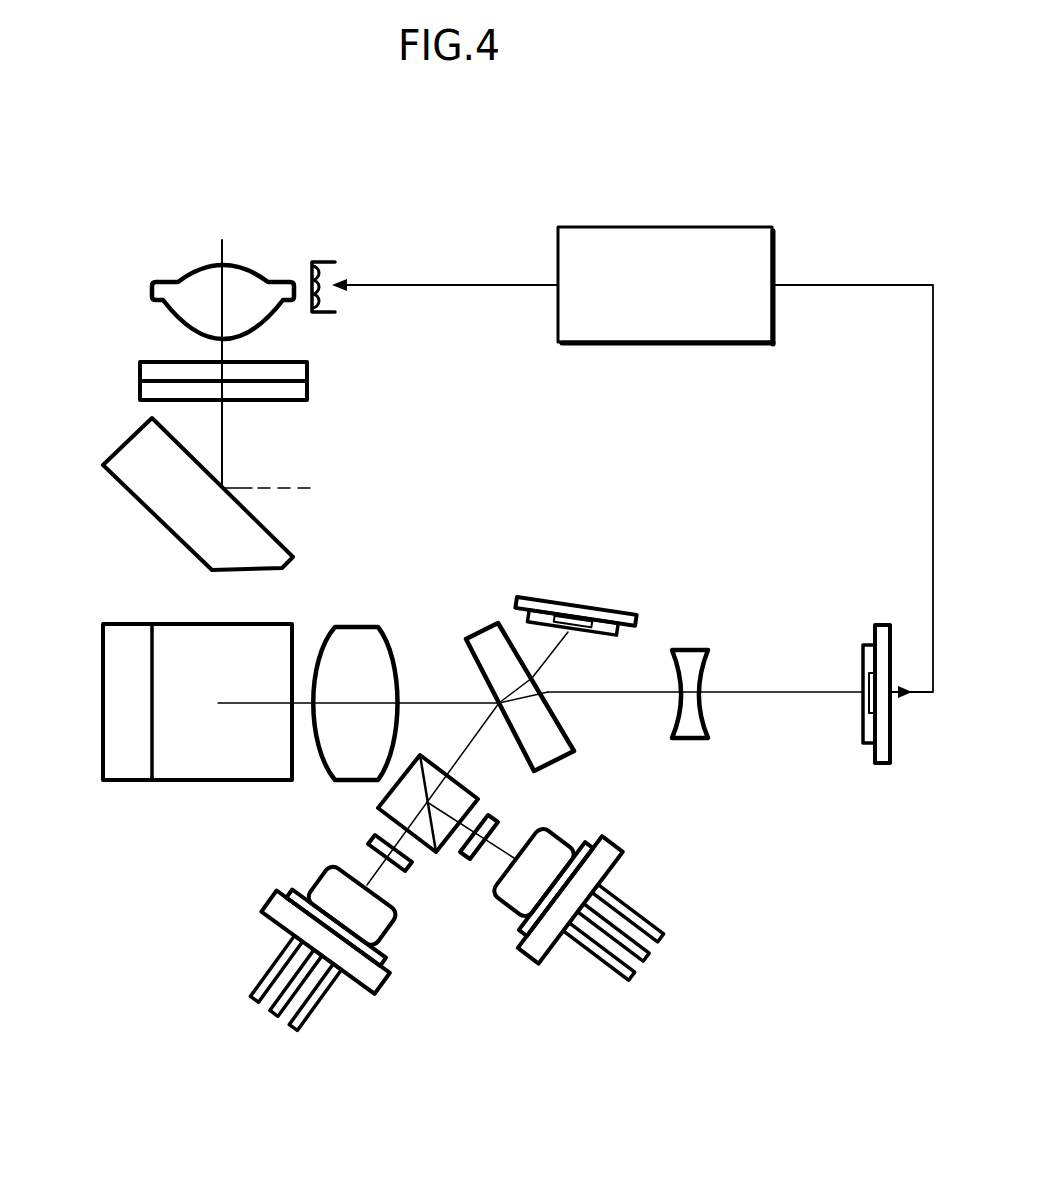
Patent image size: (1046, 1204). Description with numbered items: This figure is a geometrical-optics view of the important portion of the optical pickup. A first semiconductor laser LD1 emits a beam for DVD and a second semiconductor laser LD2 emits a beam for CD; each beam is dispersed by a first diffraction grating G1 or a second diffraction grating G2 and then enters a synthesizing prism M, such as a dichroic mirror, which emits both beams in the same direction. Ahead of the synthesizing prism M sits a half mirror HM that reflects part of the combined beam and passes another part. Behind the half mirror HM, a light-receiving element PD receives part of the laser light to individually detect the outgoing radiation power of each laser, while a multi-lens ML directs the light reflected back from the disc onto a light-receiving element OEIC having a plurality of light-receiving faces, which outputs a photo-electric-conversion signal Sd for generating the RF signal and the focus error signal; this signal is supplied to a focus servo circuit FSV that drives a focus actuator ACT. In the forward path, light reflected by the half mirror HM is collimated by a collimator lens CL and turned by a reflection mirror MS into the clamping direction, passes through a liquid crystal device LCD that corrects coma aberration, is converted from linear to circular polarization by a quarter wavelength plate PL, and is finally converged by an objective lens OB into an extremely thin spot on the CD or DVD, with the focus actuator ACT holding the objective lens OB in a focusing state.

The objective lens OB is at (157, 285).
The focus actuator ACT is at (320, 260).
The ¼ wavelength plate PL is at (140, 372).
The liquid crystal device LCD is at (140, 390).
The reflection mirror MS is at (176, 623).
The collimator lens CL is at (365, 627).
The half mirror HM is at (483, 628).
The light-receiving element PD is at (598, 598).
The multi-lens ML is at (696, 650).
The synthesizing prism M is at (439, 768).
The first diffraction grating G1 is at (372, 840).
The second diffraction grating G2 is at (492, 818).
The first semiconductor laser LD1 is at (378, 932).
The second semiconductor laser LD2 is at (559, 836).
The light-receiving element OEIC is at (870, 645).
The focus servo circuit FSV is at (700, 227).
The photo-electric-conversion signal Sd is at (933, 435).